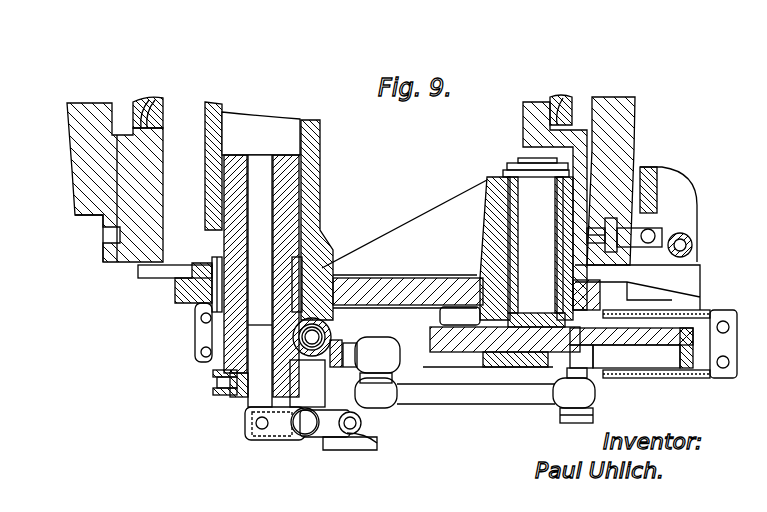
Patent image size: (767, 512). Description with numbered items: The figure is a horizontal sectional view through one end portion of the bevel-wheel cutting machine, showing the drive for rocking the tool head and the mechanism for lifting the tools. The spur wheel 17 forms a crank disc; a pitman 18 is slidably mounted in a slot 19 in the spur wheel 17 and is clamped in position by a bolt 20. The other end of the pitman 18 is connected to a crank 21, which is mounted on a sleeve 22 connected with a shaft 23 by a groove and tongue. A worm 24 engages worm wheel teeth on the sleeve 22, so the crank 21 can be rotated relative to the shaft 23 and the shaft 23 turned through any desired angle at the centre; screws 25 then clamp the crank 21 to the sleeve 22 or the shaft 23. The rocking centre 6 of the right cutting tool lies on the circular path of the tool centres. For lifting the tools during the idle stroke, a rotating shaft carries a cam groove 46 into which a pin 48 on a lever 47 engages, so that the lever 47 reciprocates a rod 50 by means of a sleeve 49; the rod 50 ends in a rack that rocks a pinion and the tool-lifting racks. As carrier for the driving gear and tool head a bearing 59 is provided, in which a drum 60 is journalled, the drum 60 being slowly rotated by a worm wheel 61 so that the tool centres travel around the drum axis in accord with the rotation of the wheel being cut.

The rocking centre 6 is at (259, 112).
The spur wheel 17 is at (707, 380).
The pitman 18 is at (495, 400).
The slot 19 is at (607, 358).
The bolt 20 is at (592, 375).
The crank 21 is at (388, 350).
The sleeve 22 is at (310, 275).
The shaft 23 is at (230, 157).
The worm 24 is at (337, 318).
The screws 25 is at (200, 350).
The cam groove 46 is at (370, 428).
The lever 47 is at (283, 427).
The pin 48 is at (348, 450).
The sleeve 49 is at (250, 410).
The rod 50 is at (260, 281).
The bearing 59 is at (74, 214).
The drum 60 is at (163, 197).
The worm wheel 61 is at (133, 105).